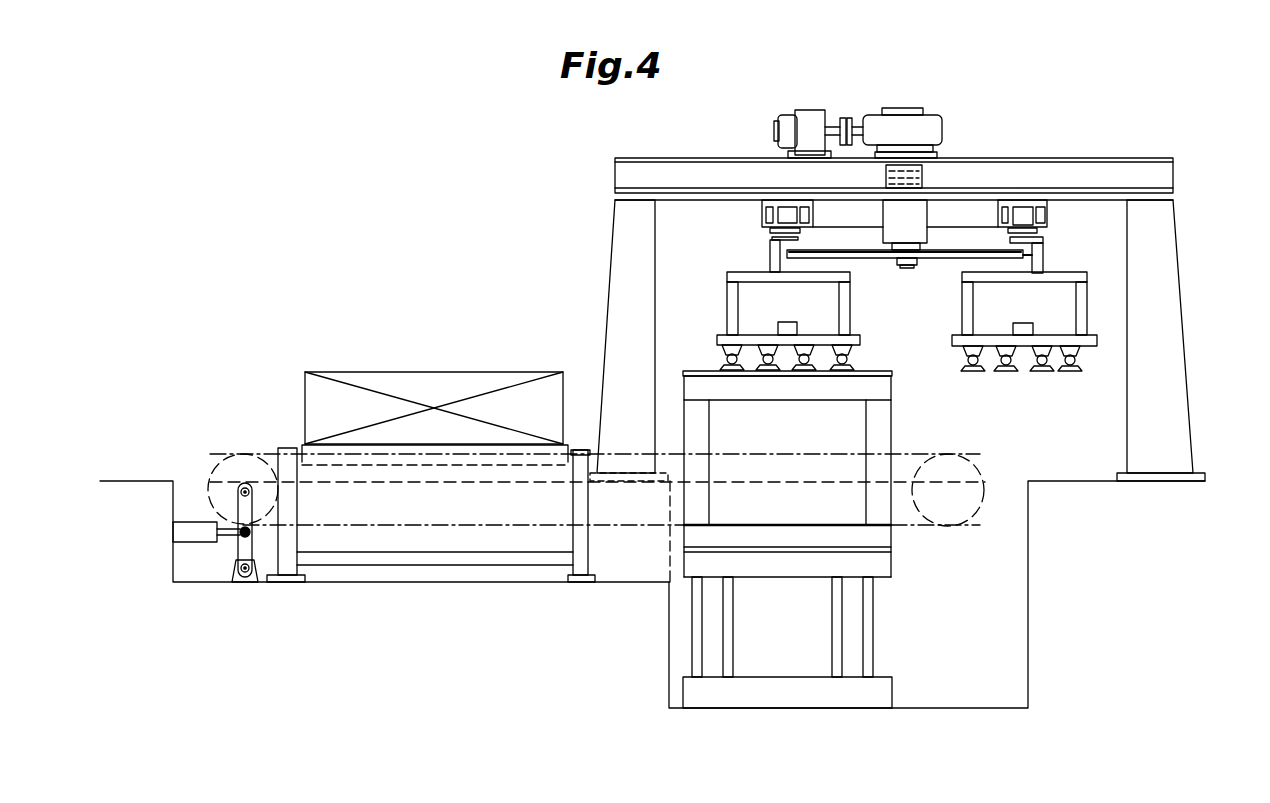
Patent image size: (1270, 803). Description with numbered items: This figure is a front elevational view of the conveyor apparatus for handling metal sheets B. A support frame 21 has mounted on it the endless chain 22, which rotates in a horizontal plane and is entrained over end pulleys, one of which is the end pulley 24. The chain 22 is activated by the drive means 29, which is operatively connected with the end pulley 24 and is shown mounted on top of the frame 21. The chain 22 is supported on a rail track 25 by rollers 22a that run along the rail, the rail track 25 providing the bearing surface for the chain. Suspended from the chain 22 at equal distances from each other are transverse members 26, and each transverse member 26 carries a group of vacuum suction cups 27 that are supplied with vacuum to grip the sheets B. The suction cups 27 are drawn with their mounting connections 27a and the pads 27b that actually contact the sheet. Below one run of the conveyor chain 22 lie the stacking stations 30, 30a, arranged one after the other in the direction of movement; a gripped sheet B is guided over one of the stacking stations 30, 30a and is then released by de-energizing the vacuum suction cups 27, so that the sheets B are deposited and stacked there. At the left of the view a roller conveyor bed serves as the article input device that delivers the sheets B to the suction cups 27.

The support frame 21 is at (1077, 173).
The endless chain 22 is at (790, 255).
The rollers 22a is at (1027, 218).
The end pulley 24 is at (870, 267).
The rail track 25 is at (1040, 230).
The transverse members 26 is at (728, 305).
The vacuum suction cups 27 is at (901, 379).
The suction connector 27a is at (1022, 324).
The suction pad 27b is at (1010, 362).
The drive means 29 is at (821, 147).
The stacking station 30 is at (841, 542).
The stacking station 30a is at (787, 642).
The sheets B is at (877, 368).